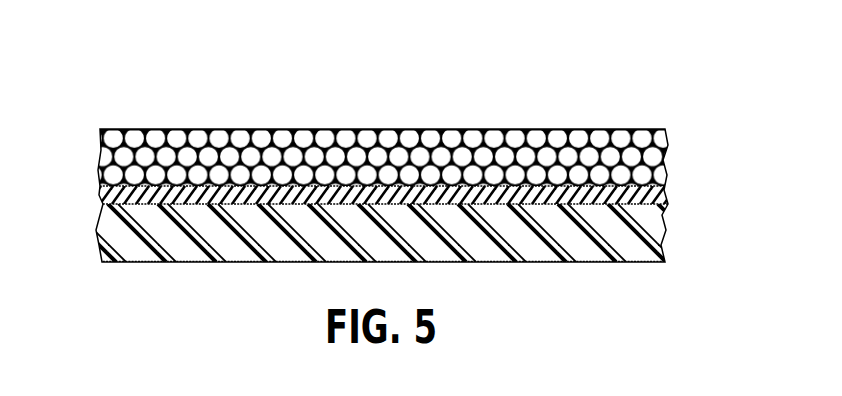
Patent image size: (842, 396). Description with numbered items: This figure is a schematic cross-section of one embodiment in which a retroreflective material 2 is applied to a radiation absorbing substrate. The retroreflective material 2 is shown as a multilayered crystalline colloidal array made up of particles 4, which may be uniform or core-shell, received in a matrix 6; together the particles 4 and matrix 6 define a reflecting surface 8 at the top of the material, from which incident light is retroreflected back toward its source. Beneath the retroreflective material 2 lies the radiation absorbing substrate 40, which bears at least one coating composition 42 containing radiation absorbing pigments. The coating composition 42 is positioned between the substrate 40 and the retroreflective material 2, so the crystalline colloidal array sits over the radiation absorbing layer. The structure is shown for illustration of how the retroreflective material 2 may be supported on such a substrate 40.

The retroreflective material 2 is at (371, 121).
The particles 4 is at (113, 137).
The matrix 6 is at (123, 131).
The reflecting surface 8 is at (152, 132).
The radiation absorbing substrate 40 is at (660, 238).
The coating composition 42 is at (100, 192).